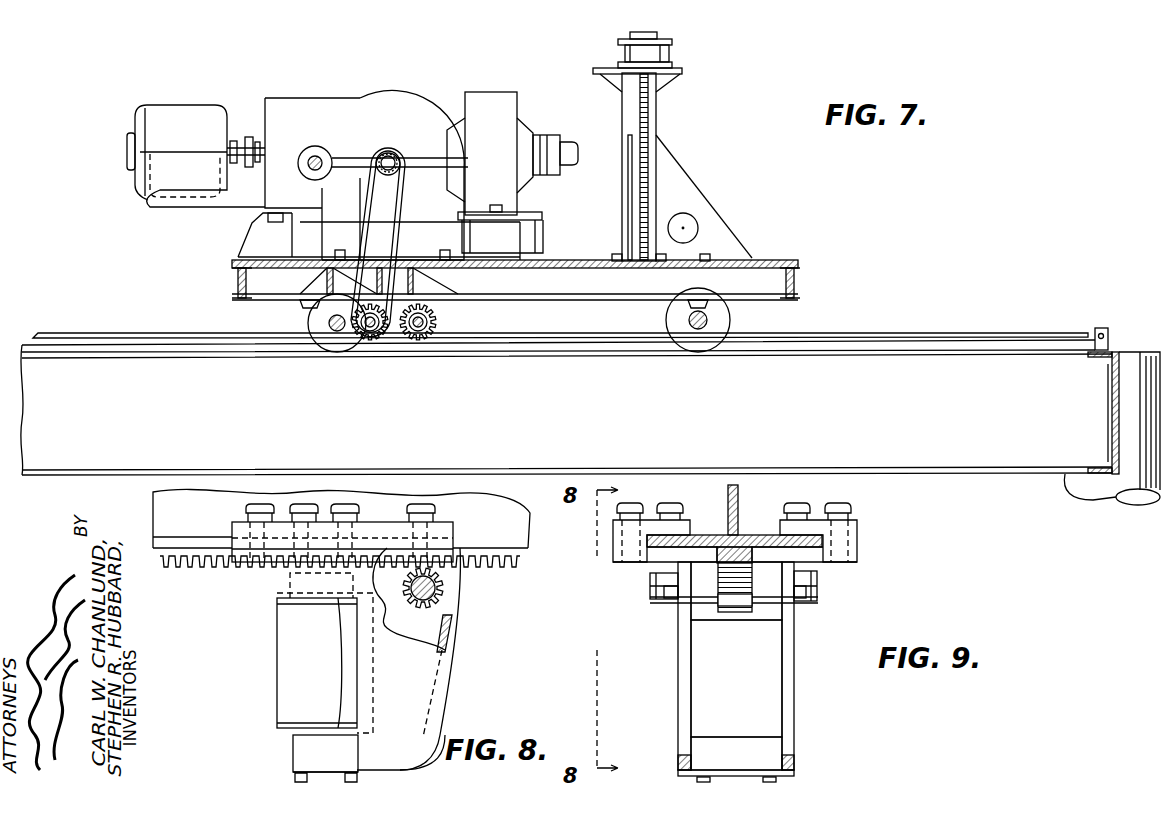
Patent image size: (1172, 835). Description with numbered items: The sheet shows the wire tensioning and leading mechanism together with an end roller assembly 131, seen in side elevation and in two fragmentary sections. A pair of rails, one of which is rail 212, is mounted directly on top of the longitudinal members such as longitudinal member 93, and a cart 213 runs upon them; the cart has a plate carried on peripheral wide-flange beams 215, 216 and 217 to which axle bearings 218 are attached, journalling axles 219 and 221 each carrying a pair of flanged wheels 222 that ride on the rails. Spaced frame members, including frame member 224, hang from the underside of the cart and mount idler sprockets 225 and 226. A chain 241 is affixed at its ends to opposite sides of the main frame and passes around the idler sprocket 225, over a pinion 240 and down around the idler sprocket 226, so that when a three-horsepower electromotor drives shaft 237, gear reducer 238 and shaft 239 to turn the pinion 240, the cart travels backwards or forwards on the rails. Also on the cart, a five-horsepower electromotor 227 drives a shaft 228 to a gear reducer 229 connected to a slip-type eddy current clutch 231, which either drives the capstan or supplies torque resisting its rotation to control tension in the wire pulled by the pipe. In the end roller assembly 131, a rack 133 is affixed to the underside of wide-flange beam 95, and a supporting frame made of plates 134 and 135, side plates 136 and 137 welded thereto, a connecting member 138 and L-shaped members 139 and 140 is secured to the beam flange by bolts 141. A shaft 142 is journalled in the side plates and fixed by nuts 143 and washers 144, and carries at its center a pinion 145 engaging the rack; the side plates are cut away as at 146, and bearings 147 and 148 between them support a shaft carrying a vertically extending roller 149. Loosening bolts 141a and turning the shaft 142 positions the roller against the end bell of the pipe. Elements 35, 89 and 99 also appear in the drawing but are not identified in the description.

In FIG. 7, the pipe 35 is at (1092, 492).
In FIG. 7, the roller 89 is at (1120, 365).
In FIG. 7, the longitudinal member 93 is at (1040, 372).
In FIG. 8, the wide-flange beam 95 is at (161, 501).
In FIG. 9, the wide-flange beam 95 is at (743, 497).
In FIG. 8, the rail base 99 is at (165, 524).
In FIG. 8, the end roller assembly 131 is at (455, 699).
In FIG. 9, the end roller assembly 131 is at (808, 714).
In FIG. 8, the rack 133 is at (510, 560).
In FIG. 9, the rack 133 is at (745, 545).
In FIG. 9, the plate 134 is at (840, 560).
In FIG. 8, the plate 135 is at (240, 556).
In FIG. 9, the plate 135 is at (652, 556).
In FIG. 9, the side plate 136 is at (797, 683).
In FIG. 8, the side plate 137 is at (418, 762).
In FIG. 9, the side plate 137 is at (690, 705).
In FIG. 8, the connecting member 138 is at (452, 623).
In FIG. 9, the connecting member 138 is at (775, 728).
In FIG. 9, the L-shaped member 139 is at (857, 530).
In FIG. 8, the L-shaped member 140 is at (246, 522).
In FIG. 9, the L-shaped member 140 is at (614, 538).
In FIG. 8, the bolts 141 is at (436, 508).
In FIG. 9, the bolts 141 is at (632, 503).
In FIG. 8, the bolts 141a is at (359, 507).
In FIG. 9, the bolts 141a is at (675, 503).
In FIG. 8, the shaft 142 is at (442, 593).
In FIG. 9, the shaft 142 is at (769, 615).
In FIG. 9, the nuts 143 is at (665, 585).
In FIG. 9, the washers 144 is at (682, 607).
In FIG. 8, the pinion 145 is at (436, 586).
In FIG. 9, the pinion 145 is at (742, 607).
In FIG. 8, the cut-away portion 146 is at (343, 663).
In FIG. 8, the bearing 147 is at (358, 750).
In FIG. 9, the bearing 147 is at (775, 752).
In FIG. 8, the bearing 148 is at (300, 580).
In FIG. 8, the vertically extending roller 149 is at (300, 676).
In FIG. 7, the rail 212 is at (975, 350).
In FIG. 7, the cart 213 is at (813, 264).
In FIG. 7, the wide-flange beam 215 is at (588, 283).
In FIG. 7, the wide-flange beam 216 is at (798, 278).
In FIG. 7, the wide-flange beam 217 is at (238, 282).
In FIG. 7, the axle bearings 218 is at (303, 308).
In FIG. 7, the axle 219 is at (688, 320).
In FIG. 7, the axle 221 is at (331, 331).
In FIG. 7, the flanged wheels 222 is at (337, 352).
In FIG. 7, the frame member 224 is at (422, 342).
In FIG. 7, the idler sprocket 225 is at (437, 322).
In FIG. 7, the idler sprocket 226 is at (371, 341).
In FIG. 7, the electromotor 227 is at (178, 105).
In FIG. 7, the shaft 228 is at (237, 143).
In FIG. 7, the gear reducer 229 is at (327, 105).
In FIG. 7, the eddy current clutch 231 is at (505, 92).
In FIG. 7, the shaft 237 is at (311, 158).
In FIG. 7, the gear reducer 238 is at (398, 96).
In FIG. 7, the shaft 239 is at (375, 178).
In FIG. 7, the pinion 240 is at (388, 151).
In FIG. 7, the chain 241 is at (88, 338).